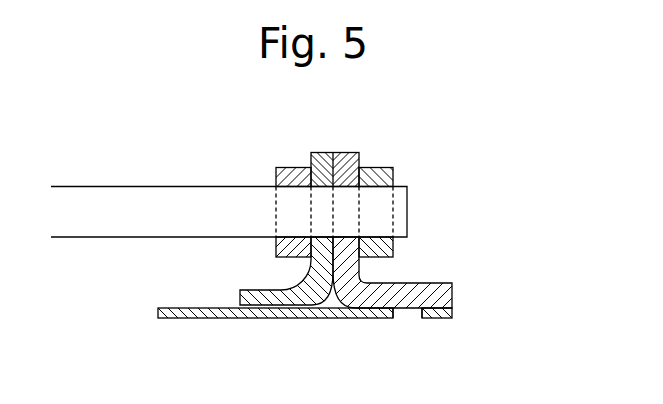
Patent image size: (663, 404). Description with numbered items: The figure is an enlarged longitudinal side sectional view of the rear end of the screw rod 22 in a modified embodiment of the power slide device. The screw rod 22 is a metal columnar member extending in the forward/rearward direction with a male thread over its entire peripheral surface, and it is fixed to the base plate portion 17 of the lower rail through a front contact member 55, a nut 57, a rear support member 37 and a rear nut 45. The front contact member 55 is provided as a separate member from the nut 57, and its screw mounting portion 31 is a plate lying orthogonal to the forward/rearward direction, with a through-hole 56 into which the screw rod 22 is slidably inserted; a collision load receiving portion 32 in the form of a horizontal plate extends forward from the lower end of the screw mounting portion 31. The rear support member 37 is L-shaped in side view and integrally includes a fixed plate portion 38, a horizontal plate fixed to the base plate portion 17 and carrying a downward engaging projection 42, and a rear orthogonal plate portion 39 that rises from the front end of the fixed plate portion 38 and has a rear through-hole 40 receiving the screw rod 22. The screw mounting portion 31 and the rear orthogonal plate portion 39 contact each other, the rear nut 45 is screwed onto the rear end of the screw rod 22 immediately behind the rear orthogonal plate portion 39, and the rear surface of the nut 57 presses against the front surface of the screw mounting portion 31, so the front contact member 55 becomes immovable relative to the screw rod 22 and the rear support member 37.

The base plate portion 17 is at (203, 320).
The screw rod 22 is at (405, 206).
The screw mounting portion 31 is at (318, 139).
The collision load receiving portion 32 is at (261, 292).
The rear support member 37 is at (397, 272).
The fixed plate portion 38 is at (430, 286).
The rear orthogonal plate portion 39 is at (352, 156).
The rear through-hole 40 is at (344, 236).
The engaging projection 42 is at (399, 320).
The rear nut 45 is at (390, 167).
The front contact member 55 is at (320, 156).
The through-hole 56 is at (317, 192).
The nut 57 is at (288, 167).